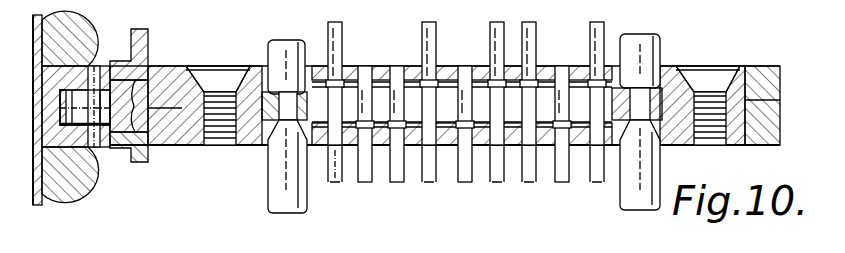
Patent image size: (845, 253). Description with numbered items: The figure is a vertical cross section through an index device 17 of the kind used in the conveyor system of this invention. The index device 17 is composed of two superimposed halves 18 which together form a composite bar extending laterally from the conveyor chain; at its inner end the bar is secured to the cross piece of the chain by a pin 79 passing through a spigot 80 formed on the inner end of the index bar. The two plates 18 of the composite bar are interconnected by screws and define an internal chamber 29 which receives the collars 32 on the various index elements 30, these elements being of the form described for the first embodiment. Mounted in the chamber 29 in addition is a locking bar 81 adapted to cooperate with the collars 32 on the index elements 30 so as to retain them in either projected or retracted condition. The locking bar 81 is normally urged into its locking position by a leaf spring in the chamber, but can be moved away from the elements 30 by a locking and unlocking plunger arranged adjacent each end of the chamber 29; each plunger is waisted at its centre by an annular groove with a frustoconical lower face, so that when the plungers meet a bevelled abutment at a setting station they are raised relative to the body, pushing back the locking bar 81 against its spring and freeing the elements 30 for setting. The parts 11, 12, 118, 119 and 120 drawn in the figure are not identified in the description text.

The block 11 is at (66, 180).
The plate 12 is at (38, 205).
The index device 17 is at (207, 56).
The superimposed halves 18 is at (770, 82).
The internal chamber 29 is at (350, 150).
The index elements 30 is at (530, 56).
The collars 32 is at (440, 68).
The pin 79 is at (93, 70).
The spigot 80 is at (70, 188).
The locking bar 81 is at (517, 116).
The collar 118 is at (148, 36).
The collar 119 is at (127, 150).
The bolt 120 is at (76, 130).